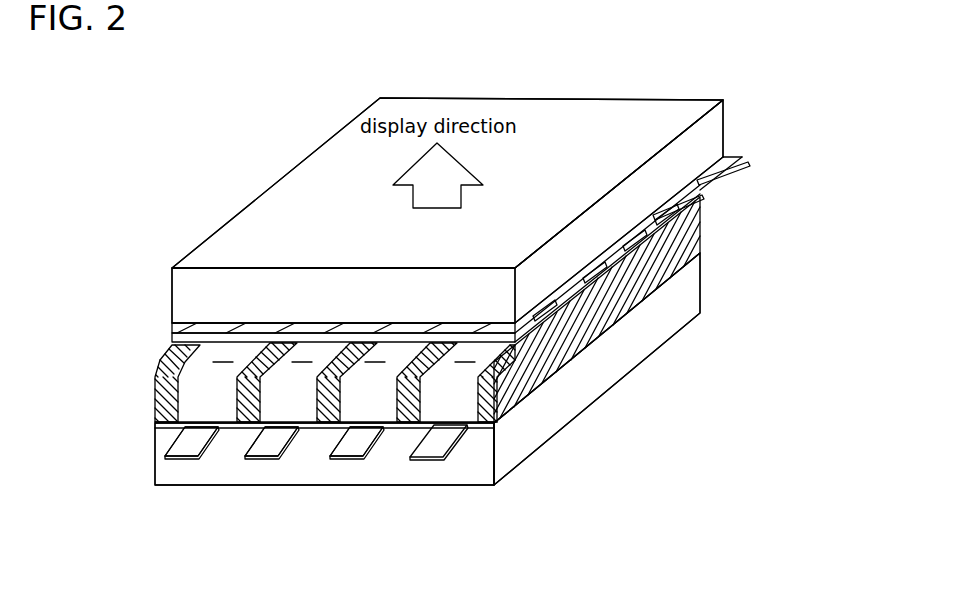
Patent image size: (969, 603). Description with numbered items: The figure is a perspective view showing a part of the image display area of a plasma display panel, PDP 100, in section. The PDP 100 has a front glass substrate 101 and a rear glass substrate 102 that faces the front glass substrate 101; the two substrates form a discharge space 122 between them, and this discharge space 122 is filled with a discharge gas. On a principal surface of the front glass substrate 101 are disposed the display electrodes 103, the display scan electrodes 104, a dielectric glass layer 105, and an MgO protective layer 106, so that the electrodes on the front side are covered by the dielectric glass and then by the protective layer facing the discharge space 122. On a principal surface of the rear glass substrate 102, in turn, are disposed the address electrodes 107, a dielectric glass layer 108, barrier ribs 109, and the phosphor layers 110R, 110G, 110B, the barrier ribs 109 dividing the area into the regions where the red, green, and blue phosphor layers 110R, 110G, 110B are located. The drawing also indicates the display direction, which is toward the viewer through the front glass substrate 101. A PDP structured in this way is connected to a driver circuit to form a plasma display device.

The PDP 100 is at (705, 290).
The front glass substrate 101 is at (180, 283).
The rear glass substrate 102 is at (392, 477).
The display electrodes 103 is at (640, 232).
The display scan electrodes 104 is at (702, 218).
The dielectric glass layer 105 is at (172, 328).
The MgO protective layer 106 is at (172, 342).
The address electrodes 107 is at (190, 443).
The dielectric glass layer 108 is at (155, 425).
The barrier ribs 109 is at (317, 378).
The phosphor layer (red) 110R is at (157, 453).
The phosphor layer (green) 110G is at (263, 452).
The phosphor layer (blue) 110B is at (357, 443).
The discharge space 122 is at (463, 363).